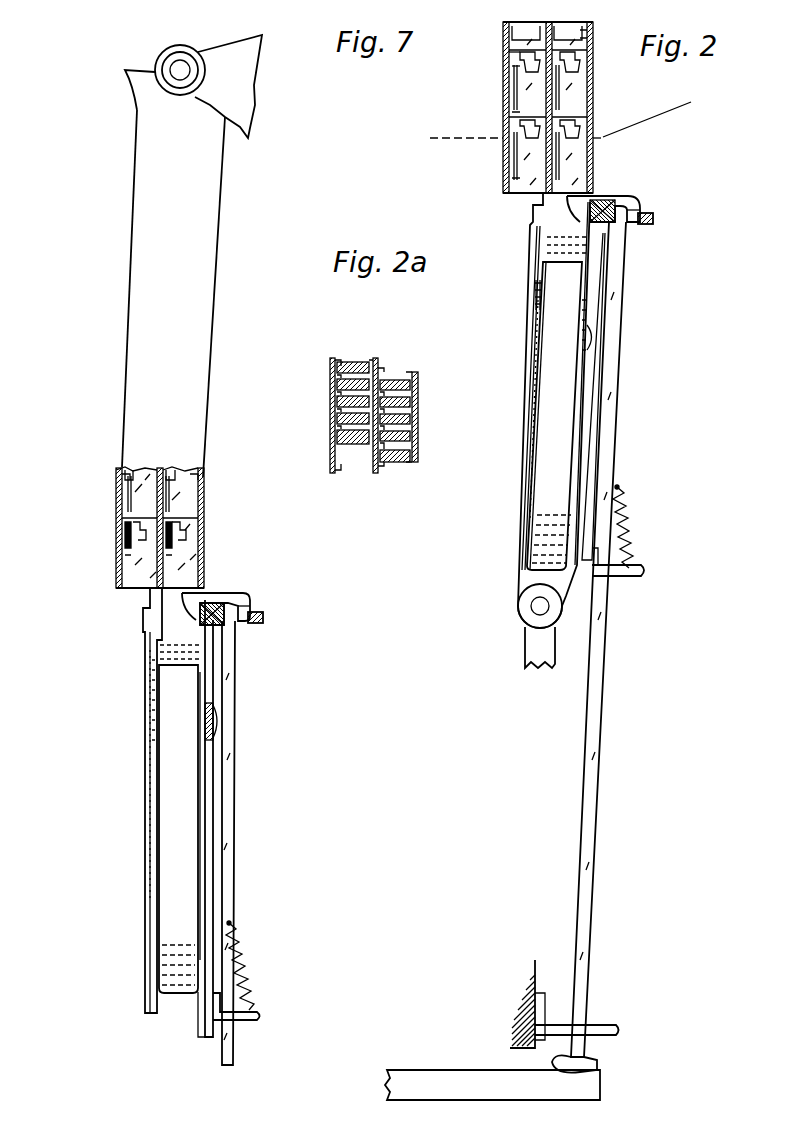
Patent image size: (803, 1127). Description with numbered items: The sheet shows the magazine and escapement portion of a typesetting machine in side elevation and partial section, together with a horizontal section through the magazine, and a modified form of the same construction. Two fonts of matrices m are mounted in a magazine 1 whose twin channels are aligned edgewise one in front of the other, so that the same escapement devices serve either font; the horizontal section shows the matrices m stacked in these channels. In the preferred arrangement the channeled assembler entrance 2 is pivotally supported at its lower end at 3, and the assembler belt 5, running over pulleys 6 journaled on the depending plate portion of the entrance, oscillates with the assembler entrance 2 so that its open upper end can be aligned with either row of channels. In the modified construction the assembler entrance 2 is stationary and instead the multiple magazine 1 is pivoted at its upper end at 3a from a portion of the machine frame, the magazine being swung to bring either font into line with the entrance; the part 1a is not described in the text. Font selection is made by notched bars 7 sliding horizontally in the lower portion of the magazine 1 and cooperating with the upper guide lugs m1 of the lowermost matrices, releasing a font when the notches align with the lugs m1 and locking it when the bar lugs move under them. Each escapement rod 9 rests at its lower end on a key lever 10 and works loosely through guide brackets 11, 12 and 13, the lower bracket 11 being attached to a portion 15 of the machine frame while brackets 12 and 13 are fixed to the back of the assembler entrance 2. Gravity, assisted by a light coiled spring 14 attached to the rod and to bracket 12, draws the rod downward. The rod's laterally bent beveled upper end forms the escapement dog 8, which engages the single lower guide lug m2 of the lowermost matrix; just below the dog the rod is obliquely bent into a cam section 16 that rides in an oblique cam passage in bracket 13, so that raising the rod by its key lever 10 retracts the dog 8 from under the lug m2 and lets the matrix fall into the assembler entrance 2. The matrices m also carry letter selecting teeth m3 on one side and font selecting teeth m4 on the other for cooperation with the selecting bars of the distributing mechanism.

In FIG. 7, the magazine 1 is at (173, 273).
In FIG. 2A, the magazine 1 is at (418, 400).
In FIG. 2, the magazine 1 is at (527, 660).
In FIG. 7, the plate 1a is at (228, 86).
In FIG. 7, the assembler entrance 2 is at (167, 647).
In FIG. 2, the assembler entrance 2 is at (653, 287).
In FIG. 2, the pivot 3 is at (518, 608).
In FIG. 7, the pivot 3a is at (181, 70).
In FIG. 7, the assembler belt 5 is at (178, 829).
In FIG. 2, the assembler belt 5 is at (554, 416).
In FIG. 7, the pulleys 6 is at (155, 738).
In FIG. 2, the pulleys 6 is at (586, 355).
In FIG. 7, the notched bar 7 is at (178, 541).
In FIG. 2A, the notched bar 7 is at (371, 405).
In FIG. 2, the notched bar 7 is at (558, 101).
In FIG. 7, the escapement dog 8 is at (227, 597).
In FIG. 2, the escapement dog 8 is at (621, 198).
In FIG. 7, the escapement rod 9 is at (233, 672).
In FIG. 2, the escapement rod 9 is at (589, 751).
In FIG. 2, the key lever 10 is at (587, 1090).
In FIG. 2, the guide bracket 11 is at (620, 1030).
In FIG. 7, the guide bracket 12 is at (256, 1022).
In FIG. 2, the guide bracket 12 is at (646, 571).
In FIG. 7, the guide bracket 13 is at (265, 616).
In FIG. 2, the guide bracket 13 is at (655, 219).
In FIG. 7, the coiled spring 14 is at (253, 986).
In FIG. 2, the coiled spring 14 is at (626, 526).
In FIG. 2, the machine frame portion 15 is at (527, 996).
In FIG. 7, the cam section 16 is at (248, 612).
In FIG. 2, the cam section 16 is at (636, 205).
In FIG. 7, the matrices m is at (66, 608).
In FIG. 2A, the matrices m is at (410, 430).
In FIG. 2, the matrices m is at (503, 165).
In FIG. 2, the upper guide lug m1 is at (504, 68).
In FIG. 7, the lower guide lug m2 is at (165, 588).
In FIG. 2, the lower guide lug m2 is at (594, 112).
In FIG. 7, the letter selecting teeth m3 is at (117, 515).
In FIG. 2, the letter selecting teeth m3 is at (594, 38).
In FIG. 7, the font selecting teeth m4 is at (204, 518).
In FIG. 2, the font selecting teeth m4 is at (477, 59).